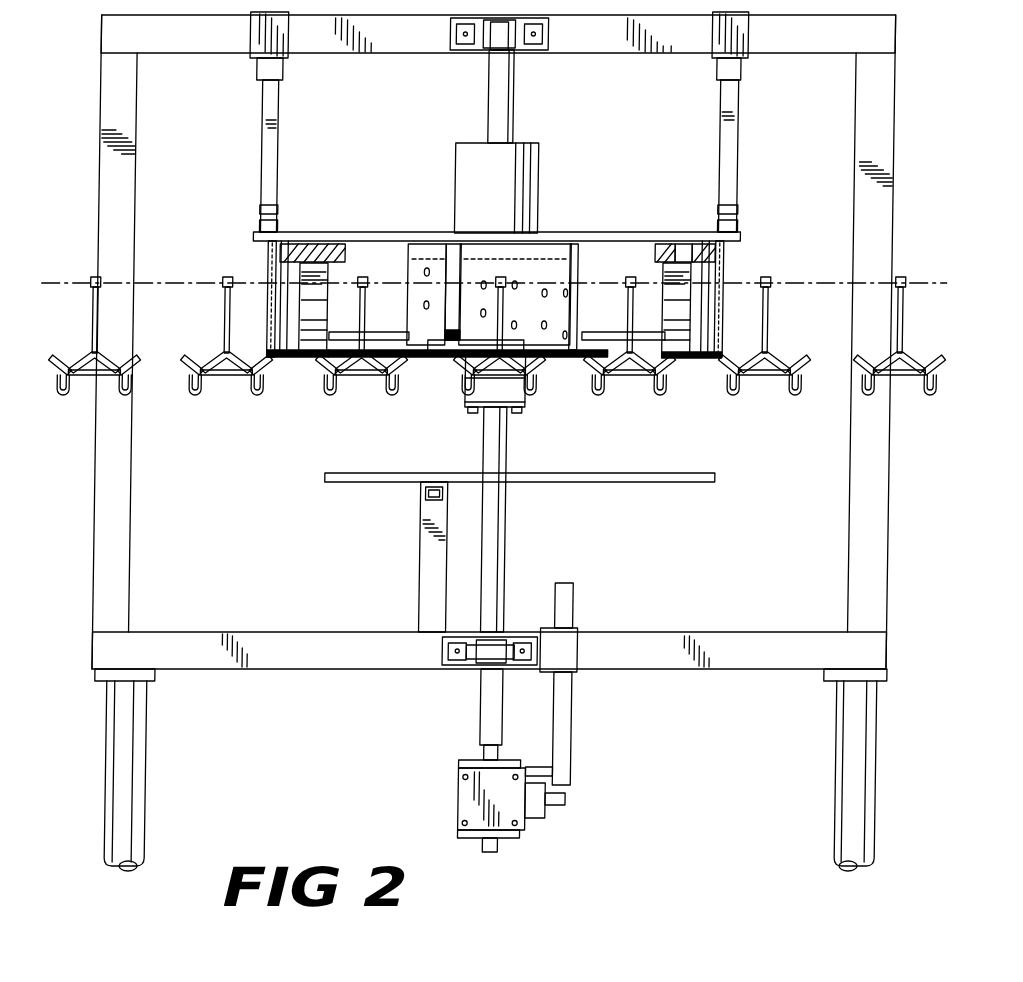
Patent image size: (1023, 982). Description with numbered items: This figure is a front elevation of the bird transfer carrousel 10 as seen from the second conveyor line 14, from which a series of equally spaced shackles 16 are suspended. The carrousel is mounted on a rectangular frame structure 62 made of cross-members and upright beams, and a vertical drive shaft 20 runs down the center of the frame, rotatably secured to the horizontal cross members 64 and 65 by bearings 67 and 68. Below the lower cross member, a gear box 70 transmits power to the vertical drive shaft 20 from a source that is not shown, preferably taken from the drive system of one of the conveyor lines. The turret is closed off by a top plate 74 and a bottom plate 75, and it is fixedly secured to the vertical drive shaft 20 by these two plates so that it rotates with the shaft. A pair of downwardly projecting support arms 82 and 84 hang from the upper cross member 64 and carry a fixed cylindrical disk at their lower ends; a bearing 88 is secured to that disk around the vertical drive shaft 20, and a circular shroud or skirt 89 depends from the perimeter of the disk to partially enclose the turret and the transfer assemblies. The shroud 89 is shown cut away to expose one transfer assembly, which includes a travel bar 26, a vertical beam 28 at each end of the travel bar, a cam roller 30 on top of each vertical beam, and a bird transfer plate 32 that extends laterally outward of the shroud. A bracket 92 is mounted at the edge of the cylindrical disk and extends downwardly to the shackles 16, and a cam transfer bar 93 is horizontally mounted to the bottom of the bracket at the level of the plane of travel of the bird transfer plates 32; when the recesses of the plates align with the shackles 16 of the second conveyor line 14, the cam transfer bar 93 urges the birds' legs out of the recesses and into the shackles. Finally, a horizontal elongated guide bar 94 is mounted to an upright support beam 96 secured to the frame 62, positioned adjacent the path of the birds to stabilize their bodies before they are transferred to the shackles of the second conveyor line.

The bird transfer carrousel 10 is at (623, 178).
The second conveyor line 14 is at (928, 283).
The shackles 16 is at (904, 302).
The vertical drive shaft 20 is at (493, 100).
The travel bar 26 is at (397, 345).
The vertical beam 28 is at (312, 303).
The cam roller 30 is at (309, 240).
The bird transfer plate 32 is at (293, 357).
The frame structure 62 is at (881, 148).
The upper cross member 64 is at (667, 53).
The lower cross member 65 is at (665, 640).
The bearing 67 is at (514, 50).
The bearing 68 is at (472, 670).
The gear box 70 is at (474, 795).
The top plate 74 is at (560, 240).
The bottom plate 75 is at (545, 372).
The support arm 82 is at (728, 160).
The support arm 84 is at (264, 115).
The bearing 88 is at (461, 170).
The circular shroud 89 is at (268, 267).
The bracket 92 is at (429, 243).
The cam transfer bar 93 is at (452, 358).
The guide bar 94 is at (357, 483).
The upright support beam 96 is at (430, 572).